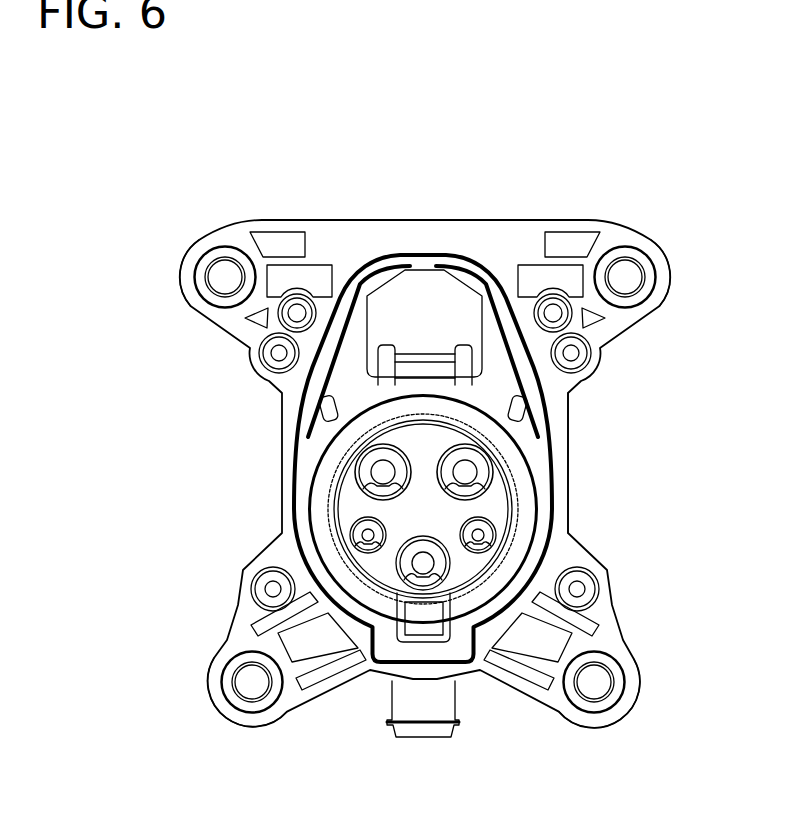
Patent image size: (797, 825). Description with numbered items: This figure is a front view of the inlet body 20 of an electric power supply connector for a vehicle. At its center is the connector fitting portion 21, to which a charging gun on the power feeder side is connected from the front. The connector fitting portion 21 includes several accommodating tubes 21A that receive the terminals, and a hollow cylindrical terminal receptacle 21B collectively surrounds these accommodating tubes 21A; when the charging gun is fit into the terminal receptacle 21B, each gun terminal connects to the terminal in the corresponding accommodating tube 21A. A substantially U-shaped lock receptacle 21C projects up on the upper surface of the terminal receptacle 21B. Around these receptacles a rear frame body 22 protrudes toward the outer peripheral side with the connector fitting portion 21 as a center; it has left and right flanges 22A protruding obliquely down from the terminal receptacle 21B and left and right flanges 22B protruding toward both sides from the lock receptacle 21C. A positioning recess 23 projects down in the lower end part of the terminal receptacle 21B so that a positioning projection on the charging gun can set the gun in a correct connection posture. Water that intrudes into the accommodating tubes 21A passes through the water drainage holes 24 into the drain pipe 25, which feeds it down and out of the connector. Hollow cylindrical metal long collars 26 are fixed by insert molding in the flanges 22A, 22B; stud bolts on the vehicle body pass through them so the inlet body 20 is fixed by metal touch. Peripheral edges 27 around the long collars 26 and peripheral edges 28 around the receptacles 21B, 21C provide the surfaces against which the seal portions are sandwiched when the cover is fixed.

The inlet body 20 is at (426, 176).
The connector fitting portion 21 is at (553, 413).
The accommodating tubes 21A is at (497, 483).
The terminal receptacle 21B is at (527, 509).
The lock receptacle 21C is at (592, 331).
The rear frame body 22 is at (498, 217).
The flanges 22A is at (225, 720).
The flanges 22B is at (177, 264).
The positioning recess 23 is at (530, 610).
The water drainage holes 24 is at (537, 499).
The drain pipe 25 is at (437, 700).
The long collars 26 is at (220, 297).
The peripheral edges of the long collars 27 is at (192, 258).
The peripheral edges of the receptacles 28 is at (562, 452).